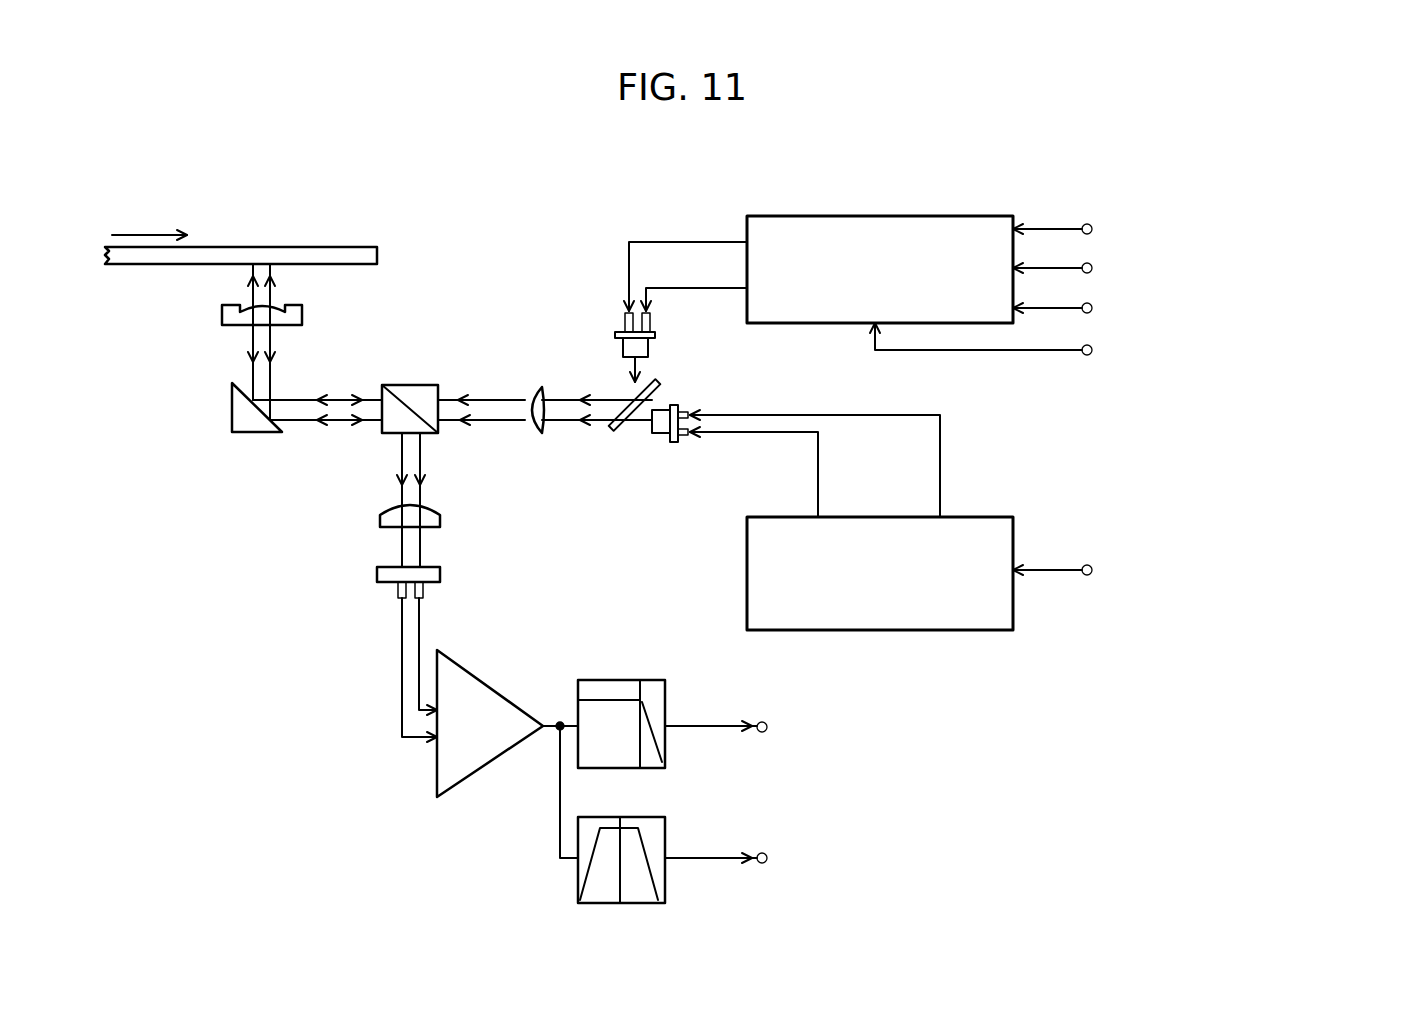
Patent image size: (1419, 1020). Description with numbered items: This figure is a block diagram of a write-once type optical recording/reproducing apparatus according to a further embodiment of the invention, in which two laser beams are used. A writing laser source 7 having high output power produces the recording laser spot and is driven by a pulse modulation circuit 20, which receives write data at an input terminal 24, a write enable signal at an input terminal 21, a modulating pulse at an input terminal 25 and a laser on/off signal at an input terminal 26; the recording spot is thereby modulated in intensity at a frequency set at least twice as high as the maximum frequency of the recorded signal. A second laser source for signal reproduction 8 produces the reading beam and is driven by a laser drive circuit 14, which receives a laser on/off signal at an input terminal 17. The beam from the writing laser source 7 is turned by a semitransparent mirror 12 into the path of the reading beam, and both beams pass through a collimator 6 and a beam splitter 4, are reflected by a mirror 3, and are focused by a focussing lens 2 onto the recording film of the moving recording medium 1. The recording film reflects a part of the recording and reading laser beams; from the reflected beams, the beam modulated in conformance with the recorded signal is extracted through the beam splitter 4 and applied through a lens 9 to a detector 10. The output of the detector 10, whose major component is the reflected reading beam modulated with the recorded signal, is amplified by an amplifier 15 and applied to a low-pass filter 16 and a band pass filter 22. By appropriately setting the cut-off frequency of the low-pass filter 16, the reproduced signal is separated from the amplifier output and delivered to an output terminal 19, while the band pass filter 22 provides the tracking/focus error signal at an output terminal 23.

The recording medium 1 is at (360, 257).
The focussing lens 2 is at (303, 315).
The mirror 3 is at (232, 417).
The beam splitter 4 is at (400, 385).
The collimator 6 is at (532, 387).
The laser source for rising temperature of a recording film 7 is at (648, 350).
The laser source for signal reproduction 8 is at (675, 405).
The lens 9 is at (440, 517).
The detector 10 is at (440, 574).
The semitransparent mirror 12 is at (612, 430).
The laser drive circuit 14 is at (960, 517).
The amplifier 15 is at (495, 682).
The low-pass filter (LPF) 16 is at (665, 703).
The input terminal 17 is at (1093, 565).
The output terminal 19 is at (767, 722).
The pulse modulation circuit 20 is at (875, 216).
The input terminal 21 is at (1093, 268).
The band pass filter (BPF) 22 is at (665, 838).
The output terminal 23 is at (767, 855).
The input terminal 24 is at (1090, 224).
The input terminal 25 is at (1093, 308).
The input terminal 26 is at (1093, 355).